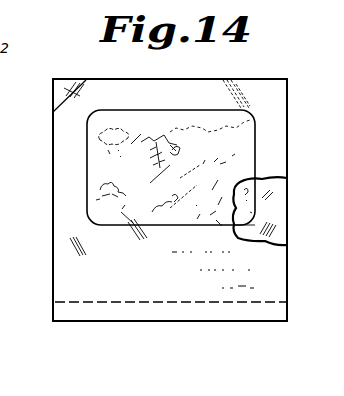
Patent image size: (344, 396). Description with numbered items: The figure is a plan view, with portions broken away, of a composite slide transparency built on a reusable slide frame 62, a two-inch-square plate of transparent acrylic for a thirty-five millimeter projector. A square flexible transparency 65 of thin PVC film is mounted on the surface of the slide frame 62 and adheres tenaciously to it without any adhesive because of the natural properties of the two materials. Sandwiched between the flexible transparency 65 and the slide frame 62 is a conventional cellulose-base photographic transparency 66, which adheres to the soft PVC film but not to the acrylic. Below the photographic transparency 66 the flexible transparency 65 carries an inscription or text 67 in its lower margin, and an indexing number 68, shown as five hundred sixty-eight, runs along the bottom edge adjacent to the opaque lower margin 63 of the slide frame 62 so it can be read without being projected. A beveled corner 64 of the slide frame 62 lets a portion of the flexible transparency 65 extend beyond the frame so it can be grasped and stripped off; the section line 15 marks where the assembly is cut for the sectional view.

The section line 15- 15 is at (22, 178).
The slide frame 62 is at (270, 239).
The opaque lower margin 63 is at (286, 316).
The beveled corner 64 is at (71, 83).
The flexible transparency 65 is at (70, 245).
The photographic transparency 66 is at (250, 204).
The inscription or text 67 is at (85, 275).
The indexing number 68 is at (147, 312).